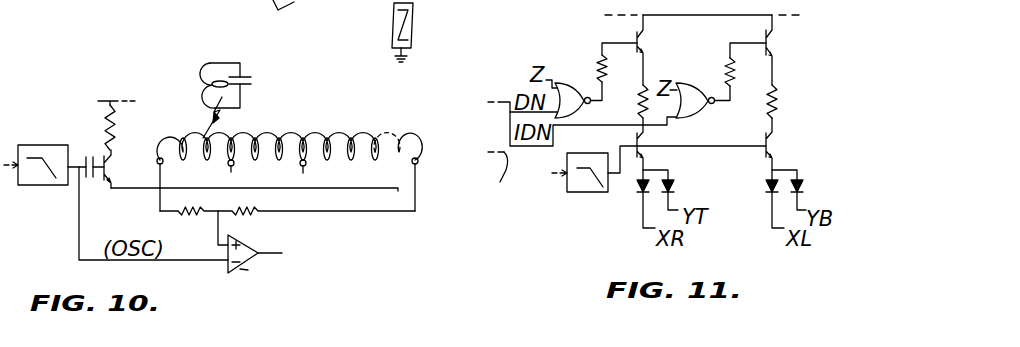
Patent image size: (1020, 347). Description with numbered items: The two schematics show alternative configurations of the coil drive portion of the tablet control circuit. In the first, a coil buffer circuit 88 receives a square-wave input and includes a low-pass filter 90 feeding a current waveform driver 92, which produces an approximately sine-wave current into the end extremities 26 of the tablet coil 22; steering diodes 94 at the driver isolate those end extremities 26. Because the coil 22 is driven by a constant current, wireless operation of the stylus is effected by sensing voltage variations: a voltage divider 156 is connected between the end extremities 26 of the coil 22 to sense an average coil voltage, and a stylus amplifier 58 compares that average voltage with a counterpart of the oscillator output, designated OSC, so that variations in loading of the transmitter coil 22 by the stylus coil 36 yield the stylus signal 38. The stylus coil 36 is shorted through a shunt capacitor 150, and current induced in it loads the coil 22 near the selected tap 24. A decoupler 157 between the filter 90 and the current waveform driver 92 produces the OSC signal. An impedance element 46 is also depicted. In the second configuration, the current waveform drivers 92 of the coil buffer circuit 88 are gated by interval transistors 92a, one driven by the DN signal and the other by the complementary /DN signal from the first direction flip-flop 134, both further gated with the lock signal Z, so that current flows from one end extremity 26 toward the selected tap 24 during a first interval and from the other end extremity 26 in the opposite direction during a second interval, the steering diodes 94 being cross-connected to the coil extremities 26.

In FIG. 10, the tablet coil 22 is at (272, 134).
In FIG. 10, the tap 24 is at (300, 173).
In FIG. 10, the end extremity 26 is at (163, 164).
In FIG. 10, the stylus coil 36 is at (210, 65).
In FIG. 10, the stylus signal 38 is at (275, 253).
In FIG. 10, the impedance element 46 is at (412, 24).
In FIG. 10, the stylus amplifier 58 is at (245, 268).
In FIG. 10, the coil buffer circuit 88 is at (127, 138).
In FIG. 10, the low-pass filter 90 is at (30, 145).
In FIG. 11, the low-pass filter 90 is at (598, 193).
In FIG. 10, the current waveform driver 92 is at (116, 116).
In FIG. 11, the current waveform driver 92 is at (651, 78).
In FIG. 11, the interval transistor 92a is at (645, 36).
In FIG. 10, the steering diode 94 is at (148, 183).
In FIG. 11, the steering diode 94 is at (668, 174).
In FIG. 11, the first direction flip-flop 134 is at (520, 178).
In FIG. 10, the shunt capacitor 150 is at (251, 78).
In FIG. 10, the voltage divider 156 is at (212, 213).
In FIG. 10, the decoupler 157 is at (95, 180).